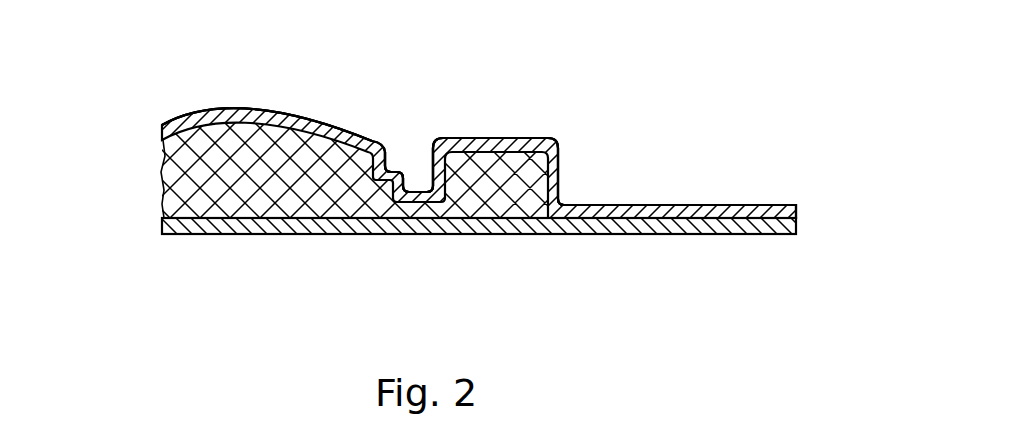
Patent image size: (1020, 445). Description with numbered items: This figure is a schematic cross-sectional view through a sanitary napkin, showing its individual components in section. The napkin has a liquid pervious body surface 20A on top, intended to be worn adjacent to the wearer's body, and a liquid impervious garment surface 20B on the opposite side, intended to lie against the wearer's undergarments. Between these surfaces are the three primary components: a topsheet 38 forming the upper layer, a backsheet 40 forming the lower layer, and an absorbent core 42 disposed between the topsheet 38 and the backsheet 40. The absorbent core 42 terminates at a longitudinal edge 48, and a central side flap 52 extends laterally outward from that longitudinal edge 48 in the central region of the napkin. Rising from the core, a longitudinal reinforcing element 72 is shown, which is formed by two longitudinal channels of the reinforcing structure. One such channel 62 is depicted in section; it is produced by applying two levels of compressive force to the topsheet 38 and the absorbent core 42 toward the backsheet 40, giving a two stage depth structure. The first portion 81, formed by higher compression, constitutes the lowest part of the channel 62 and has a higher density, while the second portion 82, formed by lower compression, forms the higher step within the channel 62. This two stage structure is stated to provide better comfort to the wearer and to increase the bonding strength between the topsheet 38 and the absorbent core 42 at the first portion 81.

The topsheet 38 is at (200, 117).
The longitudinal reinforcing element 72 is at (272, 100).
The channel 62 is at (408, 117).
The second portion 82 is at (396, 188).
The first portion 81 is at (419, 188).
The longitudinal edge 48 is at (556, 173).
The central side flap 52 is at (700, 192).
The absorbent core 42 is at (165, 158).
The backsheet 40 is at (278, 235).
The body surface 20A is at (565, 95).
The garment surface 20B is at (572, 267).